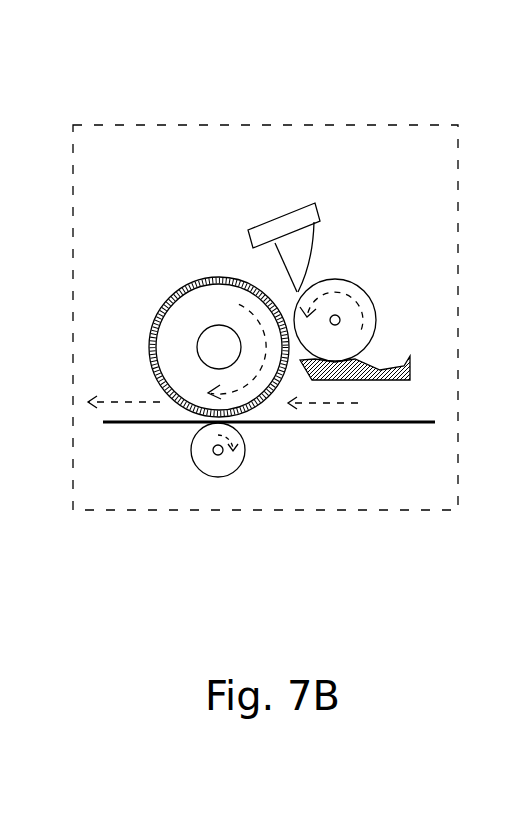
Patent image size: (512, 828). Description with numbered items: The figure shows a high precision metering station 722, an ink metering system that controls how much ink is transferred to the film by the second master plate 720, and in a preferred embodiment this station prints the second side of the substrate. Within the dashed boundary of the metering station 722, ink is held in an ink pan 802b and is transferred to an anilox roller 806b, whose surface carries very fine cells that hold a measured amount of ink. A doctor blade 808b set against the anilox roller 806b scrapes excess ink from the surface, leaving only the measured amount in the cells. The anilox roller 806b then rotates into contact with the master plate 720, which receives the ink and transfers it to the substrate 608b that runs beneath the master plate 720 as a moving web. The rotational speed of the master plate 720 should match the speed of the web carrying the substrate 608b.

The high precision metering station 722 is at (212, 125).
The second master plate 720 is at (192, 313).
The doctor blade 808b is at (262, 223).
The anilox roller 806b is at (340, 291).
The ink pan 802b is at (390, 358).
The substrate 608b is at (283, 425).